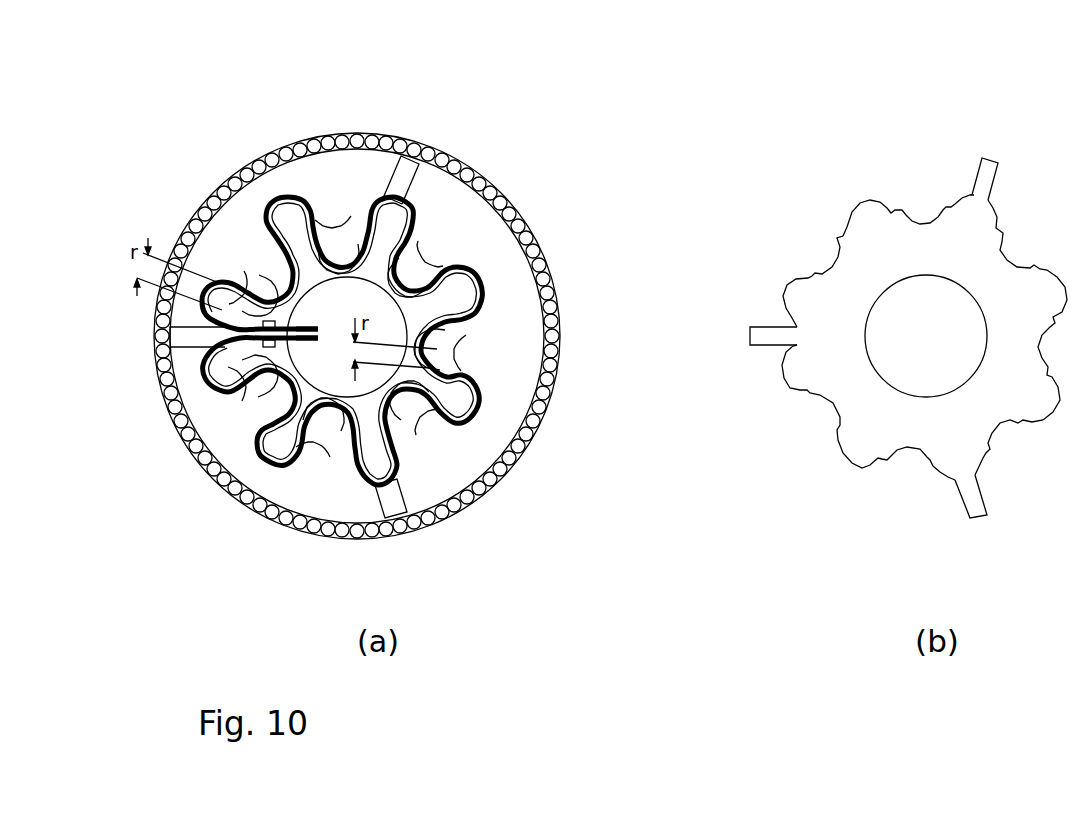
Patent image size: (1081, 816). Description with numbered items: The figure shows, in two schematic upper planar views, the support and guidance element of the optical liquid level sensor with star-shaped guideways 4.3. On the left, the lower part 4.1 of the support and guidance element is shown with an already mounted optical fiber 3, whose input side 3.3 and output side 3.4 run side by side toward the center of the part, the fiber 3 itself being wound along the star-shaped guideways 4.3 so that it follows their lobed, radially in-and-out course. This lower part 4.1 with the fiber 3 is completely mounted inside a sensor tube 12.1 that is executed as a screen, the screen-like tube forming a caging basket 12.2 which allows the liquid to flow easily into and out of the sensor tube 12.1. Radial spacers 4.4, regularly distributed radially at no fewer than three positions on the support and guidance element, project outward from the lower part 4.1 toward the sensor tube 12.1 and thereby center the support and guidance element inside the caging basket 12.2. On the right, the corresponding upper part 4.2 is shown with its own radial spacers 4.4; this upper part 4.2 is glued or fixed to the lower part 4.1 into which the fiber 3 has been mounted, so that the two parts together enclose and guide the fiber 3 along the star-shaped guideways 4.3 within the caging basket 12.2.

The optical fiber 3 is at (399, 341).
The input side 3.3 is at (321, 307).
The output side 3.4 is at (318, 364).
The lower part 4.1 is at (376, 362).
The upper part 4.2 is at (916, 382).
The star-shaped guideways 4.3 is at (284, 404).
The radial spacers 4.4 is at (529, 329).
The sensor tube 12.1 is at (390, 295).
The caging basket 12.2 is at (357, 336).